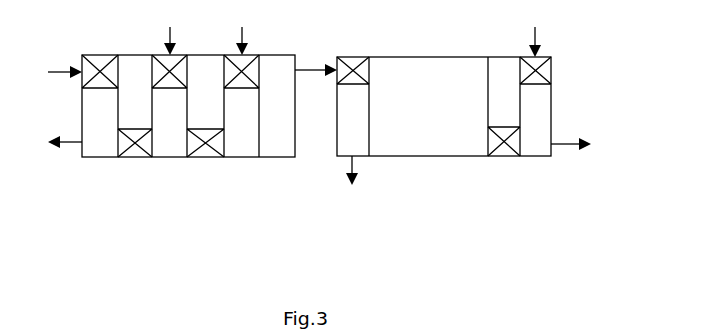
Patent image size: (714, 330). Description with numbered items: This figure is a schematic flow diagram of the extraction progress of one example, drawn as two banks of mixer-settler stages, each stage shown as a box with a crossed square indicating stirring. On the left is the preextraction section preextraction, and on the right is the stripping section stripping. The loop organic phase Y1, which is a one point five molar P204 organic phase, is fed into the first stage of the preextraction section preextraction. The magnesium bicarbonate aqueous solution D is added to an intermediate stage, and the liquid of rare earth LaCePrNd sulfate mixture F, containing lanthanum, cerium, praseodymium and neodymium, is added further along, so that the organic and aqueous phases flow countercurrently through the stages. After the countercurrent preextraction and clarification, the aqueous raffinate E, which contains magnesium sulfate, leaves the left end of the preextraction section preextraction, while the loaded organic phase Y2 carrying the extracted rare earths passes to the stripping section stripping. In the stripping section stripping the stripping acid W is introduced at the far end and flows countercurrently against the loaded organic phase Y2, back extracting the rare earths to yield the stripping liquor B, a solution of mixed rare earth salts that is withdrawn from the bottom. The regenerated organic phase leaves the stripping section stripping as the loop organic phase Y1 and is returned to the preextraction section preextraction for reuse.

The preextraction section preextraction is at (188, 145).
The stripping section stripping is at (444, 143).
The loop organic phase 1.5M P204 Y1 is at (319, 109).
The magnesium bicarbonate aqueous solution D is at (170, 31).
The liquid of rare earth LaCePrNd sulfate mixture F is at (242, 31).
The aqueous raffinate E is at (55, 142).
The loaded organic phase Y2 is at (316, 55).
The stripping acid W is at (536, 33).
The stripping liquor B is at (352, 185).